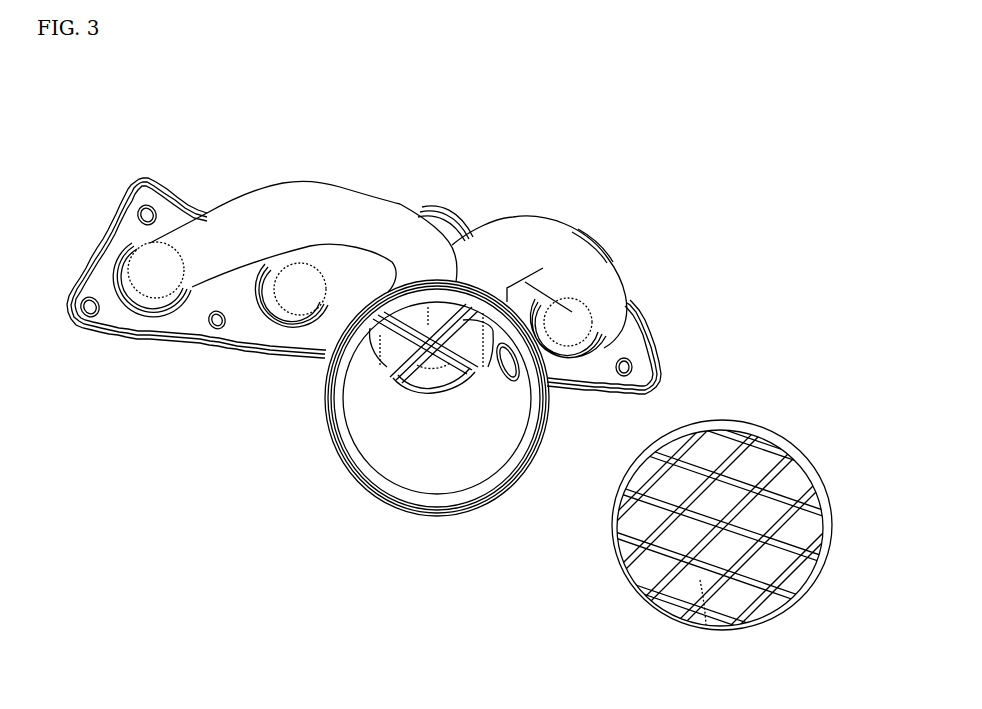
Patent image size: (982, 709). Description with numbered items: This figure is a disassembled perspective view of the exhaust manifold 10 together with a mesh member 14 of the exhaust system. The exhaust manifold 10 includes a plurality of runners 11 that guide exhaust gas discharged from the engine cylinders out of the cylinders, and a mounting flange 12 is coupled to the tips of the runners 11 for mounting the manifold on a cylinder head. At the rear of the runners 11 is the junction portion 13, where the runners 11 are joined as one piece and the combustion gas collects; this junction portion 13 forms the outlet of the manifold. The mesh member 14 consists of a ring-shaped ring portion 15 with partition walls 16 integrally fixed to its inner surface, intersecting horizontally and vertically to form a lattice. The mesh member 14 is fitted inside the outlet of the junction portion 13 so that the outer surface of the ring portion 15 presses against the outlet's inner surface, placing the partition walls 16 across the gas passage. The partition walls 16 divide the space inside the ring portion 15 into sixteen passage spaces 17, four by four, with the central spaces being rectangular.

The exhaust manifold 10 is at (556, 196).
The runners 11 is at (400, 204).
The mounting flange 12 is at (628, 341).
The junction portion 13 is at (348, 461).
The mesh member 14 is at (759, 412).
The ring portion 15 is at (708, 425).
The partition walls 16 is at (752, 582).
The passage spaces 17 is at (718, 558).